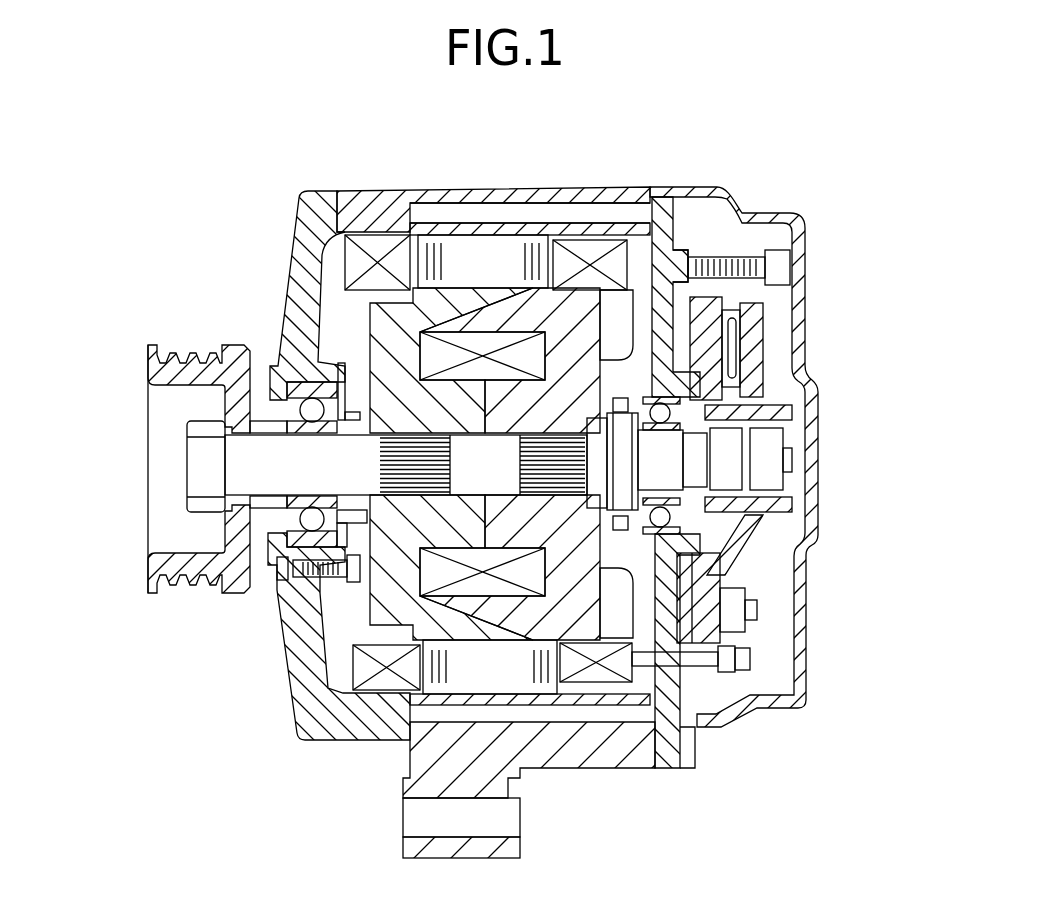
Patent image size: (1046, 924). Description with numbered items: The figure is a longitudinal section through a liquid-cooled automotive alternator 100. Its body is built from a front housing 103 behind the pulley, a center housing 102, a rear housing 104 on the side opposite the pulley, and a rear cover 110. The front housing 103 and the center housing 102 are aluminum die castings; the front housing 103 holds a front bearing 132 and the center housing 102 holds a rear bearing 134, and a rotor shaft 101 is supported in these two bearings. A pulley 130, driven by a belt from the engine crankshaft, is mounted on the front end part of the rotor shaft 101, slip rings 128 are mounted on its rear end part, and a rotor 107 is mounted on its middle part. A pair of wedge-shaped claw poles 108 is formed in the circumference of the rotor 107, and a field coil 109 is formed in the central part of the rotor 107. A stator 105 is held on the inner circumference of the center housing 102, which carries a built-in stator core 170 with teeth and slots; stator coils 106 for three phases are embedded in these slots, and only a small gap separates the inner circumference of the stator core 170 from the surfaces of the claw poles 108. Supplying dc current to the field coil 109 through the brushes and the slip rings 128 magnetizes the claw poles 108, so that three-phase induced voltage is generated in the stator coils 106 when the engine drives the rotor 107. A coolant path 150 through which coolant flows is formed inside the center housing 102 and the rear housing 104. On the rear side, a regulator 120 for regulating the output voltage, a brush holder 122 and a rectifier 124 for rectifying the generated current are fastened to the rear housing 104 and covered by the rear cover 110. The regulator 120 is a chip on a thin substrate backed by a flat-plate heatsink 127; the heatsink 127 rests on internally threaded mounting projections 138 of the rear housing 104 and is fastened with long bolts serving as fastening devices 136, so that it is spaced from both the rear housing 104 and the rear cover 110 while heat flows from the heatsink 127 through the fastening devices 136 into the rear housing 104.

The alternator 100 is at (247, 258).
The rotor shaft 101 is at (246, 470).
The center housing 102 is at (358, 203).
The front housing 103 is at (310, 212).
The rear housing 104 is at (668, 190).
The stator 105 is at (413, 729).
The stator coils 106 is at (600, 672).
The rotor 107 is at (385, 340).
The claw poles 108 is at (400, 623).
The field coil 109 is at (440, 575).
The rear cover 110 is at (754, 214).
The regulator 120 is at (738, 338).
The brush holder 122 is at (705, 318).
The rectifier 124 is at (694, 588).
The heatsink 127 is at (758, 374).
The slip rings 128 is at (767, 446).
The pulley 130 is at (148, 360).
The front bearing 132 is at (284, 527).
The rear bearing 134 is at (680, 518).
The fastening devices 136 is at (765, 252).
The mounting projections 138 is at (696, 254).
The coolant path 150 is at (448, 212).
The stator core 170 is at (507, 675).